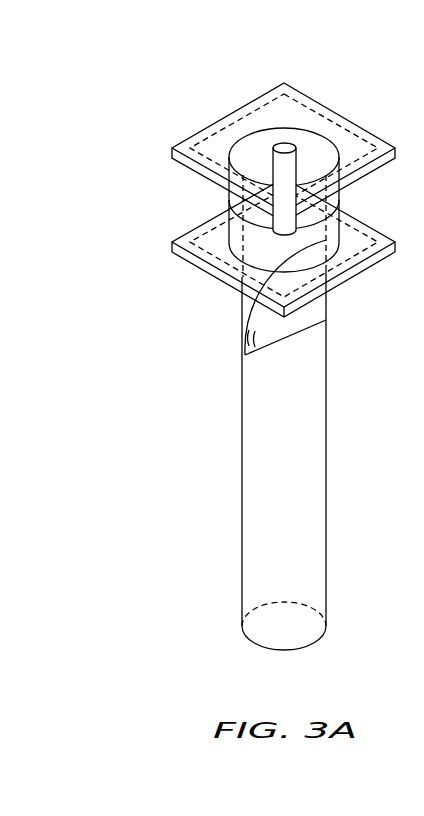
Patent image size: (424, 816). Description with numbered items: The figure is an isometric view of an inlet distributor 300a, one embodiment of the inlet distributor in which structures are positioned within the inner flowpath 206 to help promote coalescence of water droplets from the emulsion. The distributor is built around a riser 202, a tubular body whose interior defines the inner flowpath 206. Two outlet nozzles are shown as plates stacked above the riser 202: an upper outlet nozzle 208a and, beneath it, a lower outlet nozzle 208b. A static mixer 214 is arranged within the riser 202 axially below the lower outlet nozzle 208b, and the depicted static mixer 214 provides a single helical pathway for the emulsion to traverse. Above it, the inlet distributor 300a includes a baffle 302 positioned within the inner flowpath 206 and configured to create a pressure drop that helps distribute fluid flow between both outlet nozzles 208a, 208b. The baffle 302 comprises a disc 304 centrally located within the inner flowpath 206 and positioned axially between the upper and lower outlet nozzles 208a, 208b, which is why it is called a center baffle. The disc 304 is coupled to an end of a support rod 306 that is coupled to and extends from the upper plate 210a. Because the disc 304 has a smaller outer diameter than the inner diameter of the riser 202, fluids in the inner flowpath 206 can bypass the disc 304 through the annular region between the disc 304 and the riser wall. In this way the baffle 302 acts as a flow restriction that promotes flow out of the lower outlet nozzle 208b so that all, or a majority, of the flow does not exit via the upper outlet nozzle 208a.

The inlet distributor 300a is at (192, 93).
The upper plate 210a is at (308, 102).
The upper outlet nozzle 208a is at (189, 171).
The lower outlet nozzle 208b is at (189, 267).
The riser 202 is at (242, 470).
The baffle 302 is at (241, 212).
The disc 304 is at (310, 227).
The support rod 306 is at (283, 158).
The static mixer 214 is at (243, 332).
The inner flowpath 206 is at (275, 630).